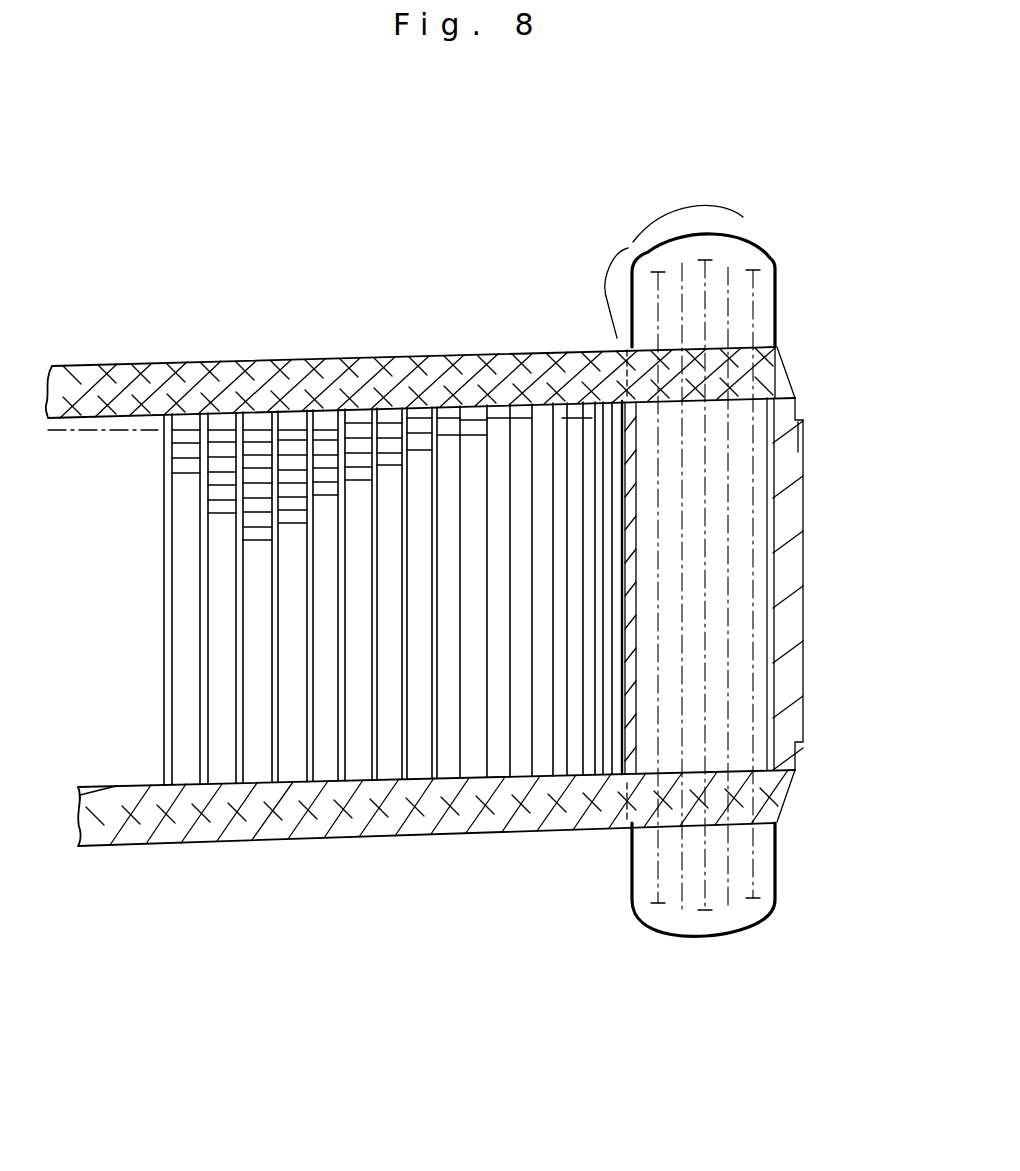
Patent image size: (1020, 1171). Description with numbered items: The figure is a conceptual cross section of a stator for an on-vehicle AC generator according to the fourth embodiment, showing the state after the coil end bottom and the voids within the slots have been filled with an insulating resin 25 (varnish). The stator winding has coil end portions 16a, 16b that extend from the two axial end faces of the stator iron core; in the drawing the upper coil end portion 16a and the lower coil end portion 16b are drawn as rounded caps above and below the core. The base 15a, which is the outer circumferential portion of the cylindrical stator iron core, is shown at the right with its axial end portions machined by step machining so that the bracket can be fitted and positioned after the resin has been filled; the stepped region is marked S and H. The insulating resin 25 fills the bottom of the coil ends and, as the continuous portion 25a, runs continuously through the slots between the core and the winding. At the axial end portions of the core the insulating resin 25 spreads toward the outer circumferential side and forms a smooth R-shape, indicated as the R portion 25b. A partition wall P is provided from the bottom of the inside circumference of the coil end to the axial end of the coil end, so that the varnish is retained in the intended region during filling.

The insulating resin 25 is at (346, 362).
The continuous portion of the insulating resin 25a is at (773, 703).
The R portion of the insulating resin 25b is at (790, 393).
The base 15a is at (790, 594).
The coil end portion 16a is at (742, 272).
The coil end portion 16b is at (740, 907).
The step S is at (800, 407).
The gap H is at (798, 452).
The partition (wall) P is at (628, 248).